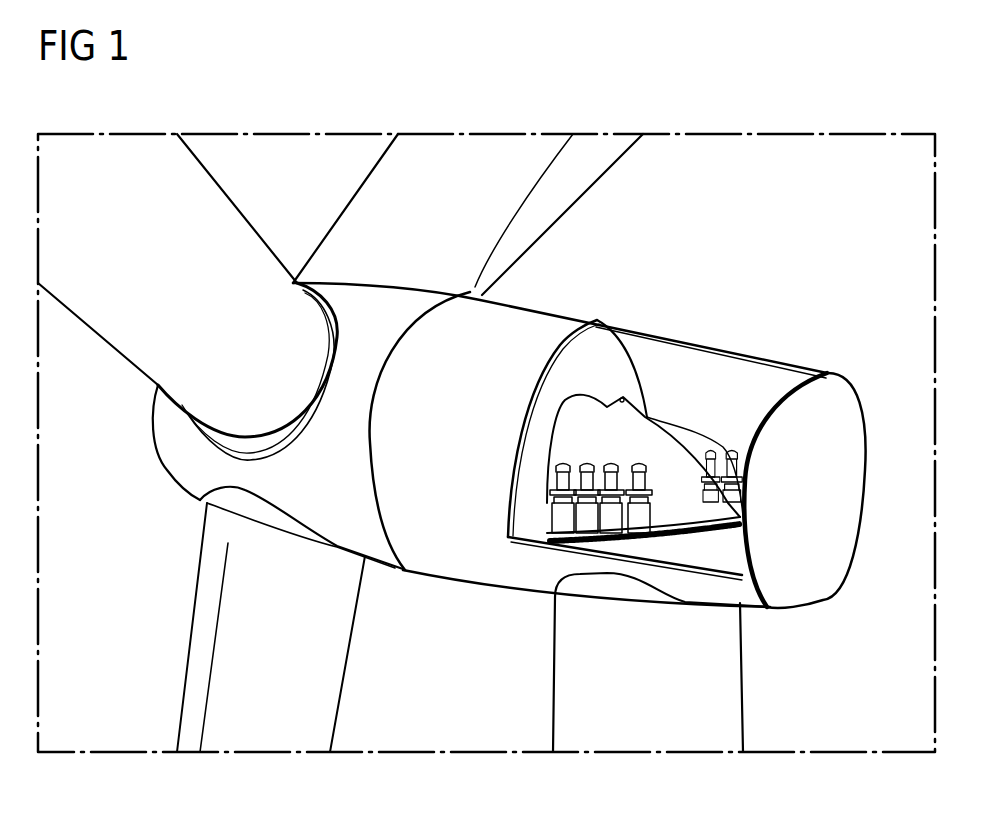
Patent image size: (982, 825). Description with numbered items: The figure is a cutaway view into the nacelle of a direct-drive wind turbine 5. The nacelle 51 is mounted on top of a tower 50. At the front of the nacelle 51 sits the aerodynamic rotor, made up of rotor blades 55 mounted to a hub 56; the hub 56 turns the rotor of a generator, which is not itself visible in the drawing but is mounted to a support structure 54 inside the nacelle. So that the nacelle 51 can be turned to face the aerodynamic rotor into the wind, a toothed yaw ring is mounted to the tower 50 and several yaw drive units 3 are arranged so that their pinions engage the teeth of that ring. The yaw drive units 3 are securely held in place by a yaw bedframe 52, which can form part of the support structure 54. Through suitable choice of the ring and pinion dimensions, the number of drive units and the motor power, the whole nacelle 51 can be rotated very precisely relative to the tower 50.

The direct-drive wind turbine 5 is at (712, 288).
The yaw drive units 3 is at (730, 450).
The tower 50 is at (738, 697).
The nacelle 51 is at (548, 327).
The yaw bedframe 52 is at (743, 560).
The support structure 54 is at (585, 410).
The rotor blades 55 is at (363, 218).
The hub 56 is at (168, 445).